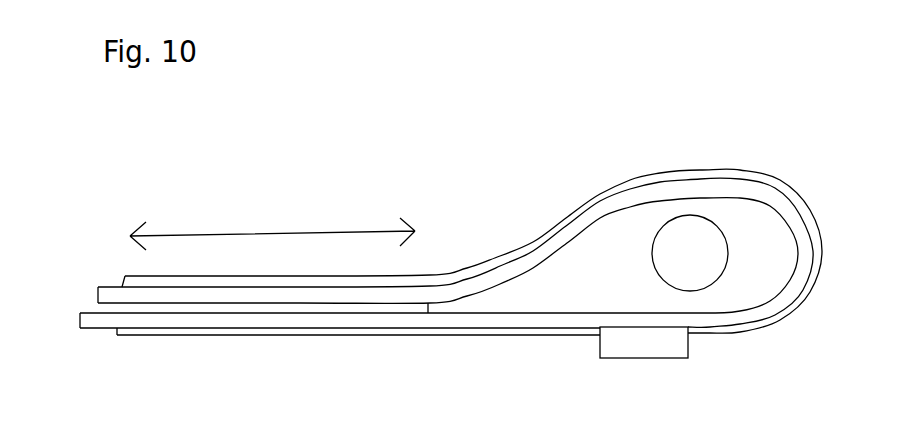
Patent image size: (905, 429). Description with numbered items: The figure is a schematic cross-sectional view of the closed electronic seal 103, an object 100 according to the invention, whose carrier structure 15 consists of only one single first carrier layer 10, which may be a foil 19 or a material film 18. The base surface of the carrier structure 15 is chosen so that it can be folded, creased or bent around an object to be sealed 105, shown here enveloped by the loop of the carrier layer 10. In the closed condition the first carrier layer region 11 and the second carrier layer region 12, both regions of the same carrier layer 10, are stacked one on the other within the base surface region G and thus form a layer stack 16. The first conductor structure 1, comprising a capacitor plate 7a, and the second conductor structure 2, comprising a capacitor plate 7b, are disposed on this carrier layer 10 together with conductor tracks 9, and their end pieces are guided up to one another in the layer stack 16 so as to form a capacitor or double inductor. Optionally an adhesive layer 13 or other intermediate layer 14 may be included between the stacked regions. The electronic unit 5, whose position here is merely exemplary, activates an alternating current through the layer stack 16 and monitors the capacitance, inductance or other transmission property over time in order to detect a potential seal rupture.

The object 100 is at (413, 261).
The electronic seal 103 is at (350, 192).
The base surface region G is at (272, 212).
The layer stack 16 is at (260, 233).
The first carrier layer 10 is at (413, 260).
The carrier structure 15 is at (413, 260).
The material film 18 is at (413, 260).
The foil 19 is at (668, 190).
The conductor track 9 is at (775, 198).
The second conductor structure 2 is at (750, 325).
The capacitor plate 7b is at (213, 282).
The second carrier layer region 12 is at (93, 273).
The first conductor structure 1 is at (528, 333).
The capacitor plate 7a is at (213, 334).
The first carrier layer region 11 is at (68, 313).
The adhesive layer 13 is at (340, 352).
The intermediate layer 14 is at (347, 311).
The object to be sealed 105 is at (660, 247).
The electronic unit 5 is at (672, 353).